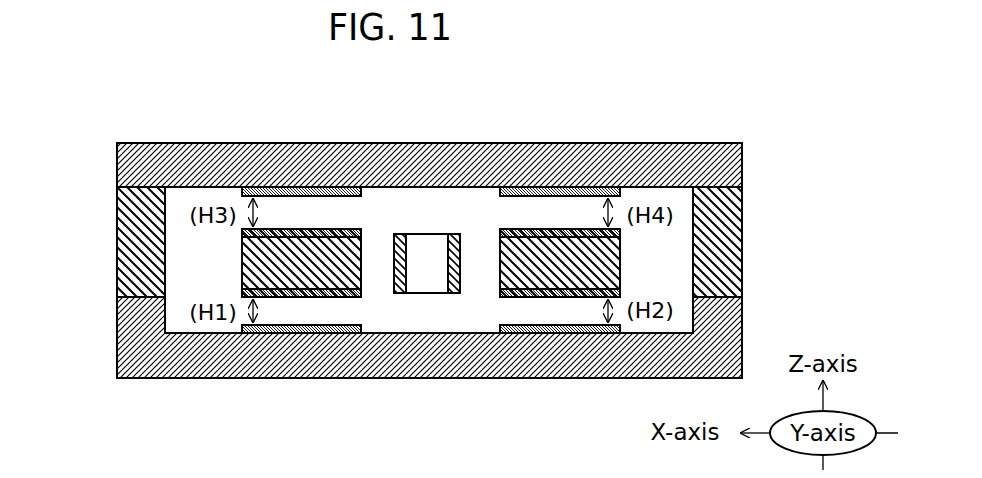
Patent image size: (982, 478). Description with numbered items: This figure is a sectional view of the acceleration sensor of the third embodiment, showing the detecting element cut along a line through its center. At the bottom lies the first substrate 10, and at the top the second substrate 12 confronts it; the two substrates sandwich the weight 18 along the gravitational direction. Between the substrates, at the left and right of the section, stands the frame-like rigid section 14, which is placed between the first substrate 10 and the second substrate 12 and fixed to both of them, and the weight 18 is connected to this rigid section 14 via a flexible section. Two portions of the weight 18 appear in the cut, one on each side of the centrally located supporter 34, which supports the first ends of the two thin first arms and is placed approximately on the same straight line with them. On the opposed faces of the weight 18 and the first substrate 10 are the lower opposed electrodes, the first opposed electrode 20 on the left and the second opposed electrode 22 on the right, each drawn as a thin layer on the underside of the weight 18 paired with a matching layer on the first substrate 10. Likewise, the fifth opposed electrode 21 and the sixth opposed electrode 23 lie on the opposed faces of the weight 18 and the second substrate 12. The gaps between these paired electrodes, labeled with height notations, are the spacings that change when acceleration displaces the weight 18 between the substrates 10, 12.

The first substrate 10 is at (132, 342).
The second substrate 12 is at (140, 162).
The rigid section 14 is at (138, 255).
The weight 18 is at (278, 240).
The first opposed electrode 20 is at (302, 333).
The fifth opposed electrode 21 is at (303, 235).
The second opposed electrode 22 is at (540, 333).
The sixth opposed electrode 23 is at (507, 235).
The supporter 34 is at (432, 282).